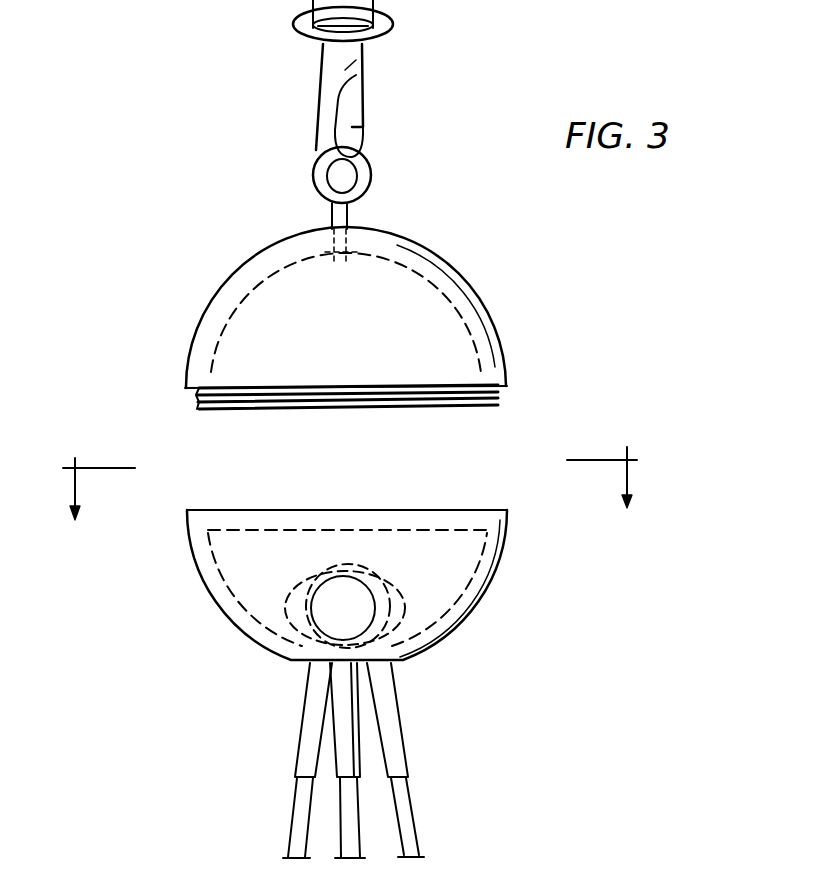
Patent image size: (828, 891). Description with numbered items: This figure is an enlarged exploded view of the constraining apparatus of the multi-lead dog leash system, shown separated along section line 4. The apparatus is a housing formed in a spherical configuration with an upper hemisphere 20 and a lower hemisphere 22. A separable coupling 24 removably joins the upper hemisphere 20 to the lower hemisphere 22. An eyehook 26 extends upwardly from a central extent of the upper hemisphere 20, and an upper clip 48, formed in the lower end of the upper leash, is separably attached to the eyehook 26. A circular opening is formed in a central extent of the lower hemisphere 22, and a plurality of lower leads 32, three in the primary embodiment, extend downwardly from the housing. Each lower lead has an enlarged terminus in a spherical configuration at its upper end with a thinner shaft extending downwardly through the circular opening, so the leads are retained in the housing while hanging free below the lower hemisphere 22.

The upper clip 48 is at (320, 88).
The eyehook 26 is at (370, 204).
The upper hemisphere 20 is at (440, 333).
The separable coupling 24 is at (214, 516).
The lower hemisphere 22 is at (470, 613).
The lower leads 32 is at (407, 822).
The section line 4- 4 is at (355, 471).